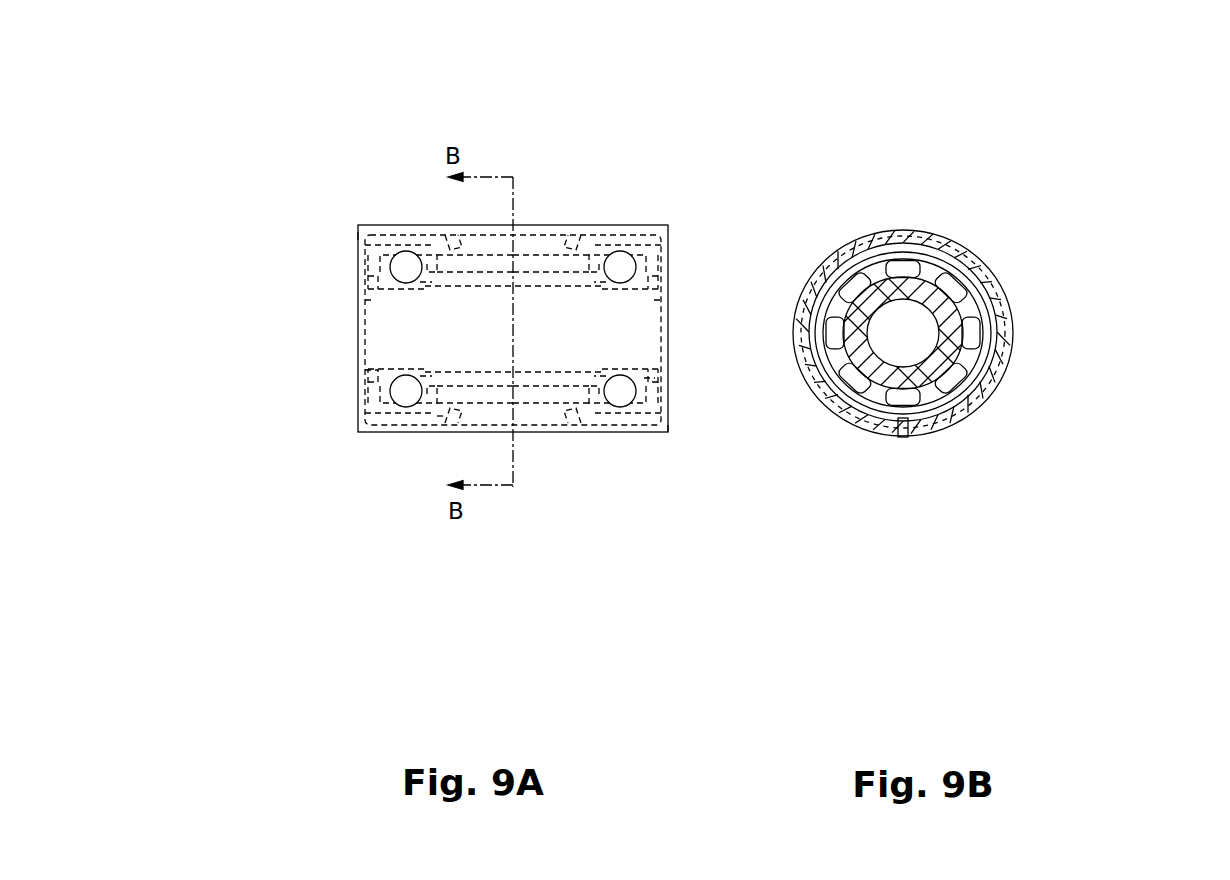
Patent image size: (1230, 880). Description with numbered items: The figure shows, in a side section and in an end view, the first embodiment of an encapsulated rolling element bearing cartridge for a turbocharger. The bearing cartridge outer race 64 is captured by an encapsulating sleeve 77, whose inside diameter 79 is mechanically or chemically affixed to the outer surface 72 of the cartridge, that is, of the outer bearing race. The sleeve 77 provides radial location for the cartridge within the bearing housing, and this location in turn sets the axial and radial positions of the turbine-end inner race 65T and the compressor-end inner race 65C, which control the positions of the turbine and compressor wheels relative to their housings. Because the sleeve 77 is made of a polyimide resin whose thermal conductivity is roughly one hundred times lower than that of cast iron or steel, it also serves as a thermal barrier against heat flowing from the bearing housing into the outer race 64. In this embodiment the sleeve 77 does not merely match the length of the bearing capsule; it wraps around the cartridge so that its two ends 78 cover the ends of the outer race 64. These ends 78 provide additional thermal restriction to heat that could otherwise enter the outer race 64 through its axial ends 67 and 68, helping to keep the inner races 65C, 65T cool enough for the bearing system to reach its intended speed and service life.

In FIG. 9A, the bearing cartridge outer race 64 is at (437, 416).
In FIG. 9B, the bearing cartridge outer race 64 is at (987, 327).
In FIG. 9A, the compressor-end inner race 65C is at (365, 370).
In FIG. 9A, the turbine-end inner race 65T is at (655, 378).
In FIG. 9B, the turbine-end inner race 65T is at (900, 372).
In FIG. 9A, the axial end of outer race 67 is at (660, 248).
In FIG. 9A, the axial end of outer race 68 is at (365, 250).
In FIG. 9A, the outer surface of REB cartridge 72 is at (430, 240).
In FIG. 9A, the encapsulating sleeve 77 is at (533, 228).
In FIG. 9B, the encapsulating sleeve 77 is at (990, 273).
In FIG. 9A, the ends of encapsulating sleeve 78 is at (358, 240).
In FIG. 9A, the inside diameter of encapsulating sleeve 79 is at (668, 228).